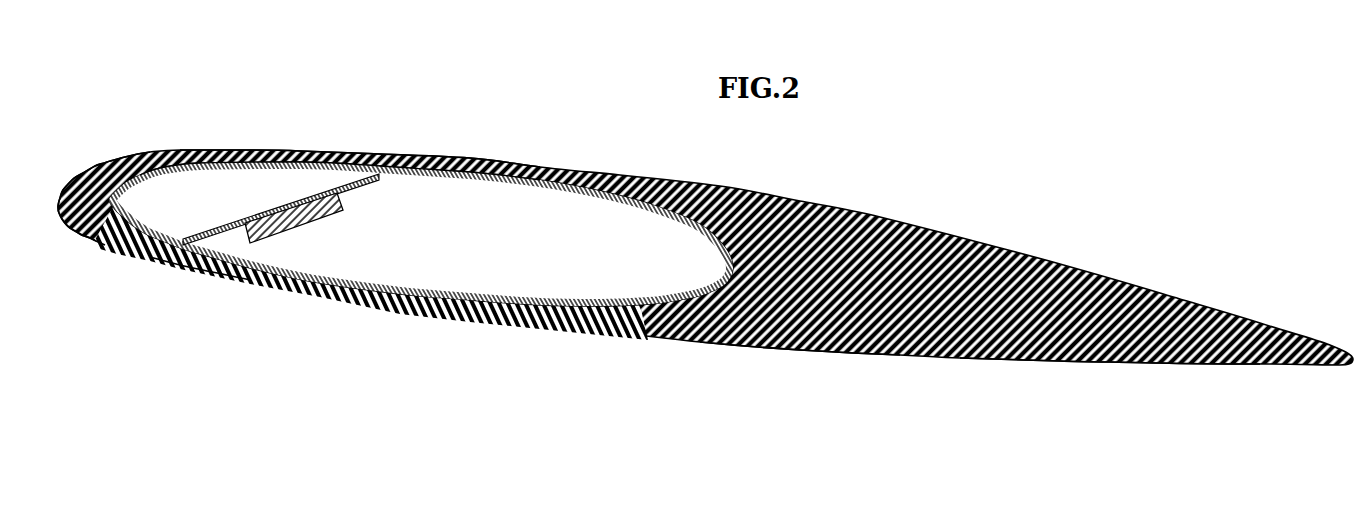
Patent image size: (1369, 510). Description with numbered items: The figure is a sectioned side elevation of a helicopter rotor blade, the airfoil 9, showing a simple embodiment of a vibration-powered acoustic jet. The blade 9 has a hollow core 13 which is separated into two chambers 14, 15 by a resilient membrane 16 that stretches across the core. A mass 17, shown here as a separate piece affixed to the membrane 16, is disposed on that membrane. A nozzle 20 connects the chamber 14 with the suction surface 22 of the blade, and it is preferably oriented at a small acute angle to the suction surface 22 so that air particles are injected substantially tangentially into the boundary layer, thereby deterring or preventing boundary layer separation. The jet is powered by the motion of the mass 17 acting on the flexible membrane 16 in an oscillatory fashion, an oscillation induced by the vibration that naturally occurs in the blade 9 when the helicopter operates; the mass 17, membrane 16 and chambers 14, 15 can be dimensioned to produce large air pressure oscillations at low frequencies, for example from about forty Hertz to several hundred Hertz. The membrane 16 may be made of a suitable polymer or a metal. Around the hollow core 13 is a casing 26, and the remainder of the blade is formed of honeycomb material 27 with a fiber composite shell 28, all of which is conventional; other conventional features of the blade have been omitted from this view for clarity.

The airfoil 9 is at (790, 197).
The hollow core 13 is at (567, 213).
The chamber 14 is at (299, 182).
The chamber 15 is at (470, 212).
The resilient membrane 16 is at (362, 185).
The mass 17 is at (322, 221).
The nozzle 20 is at (189, 151).
The suction surface 22 is at (378, 151).
The casing 26 is at (445, 300).
The honeycomb material 27 is at (790, 337).
The fiber composite shell 28 is at (1060, 363).